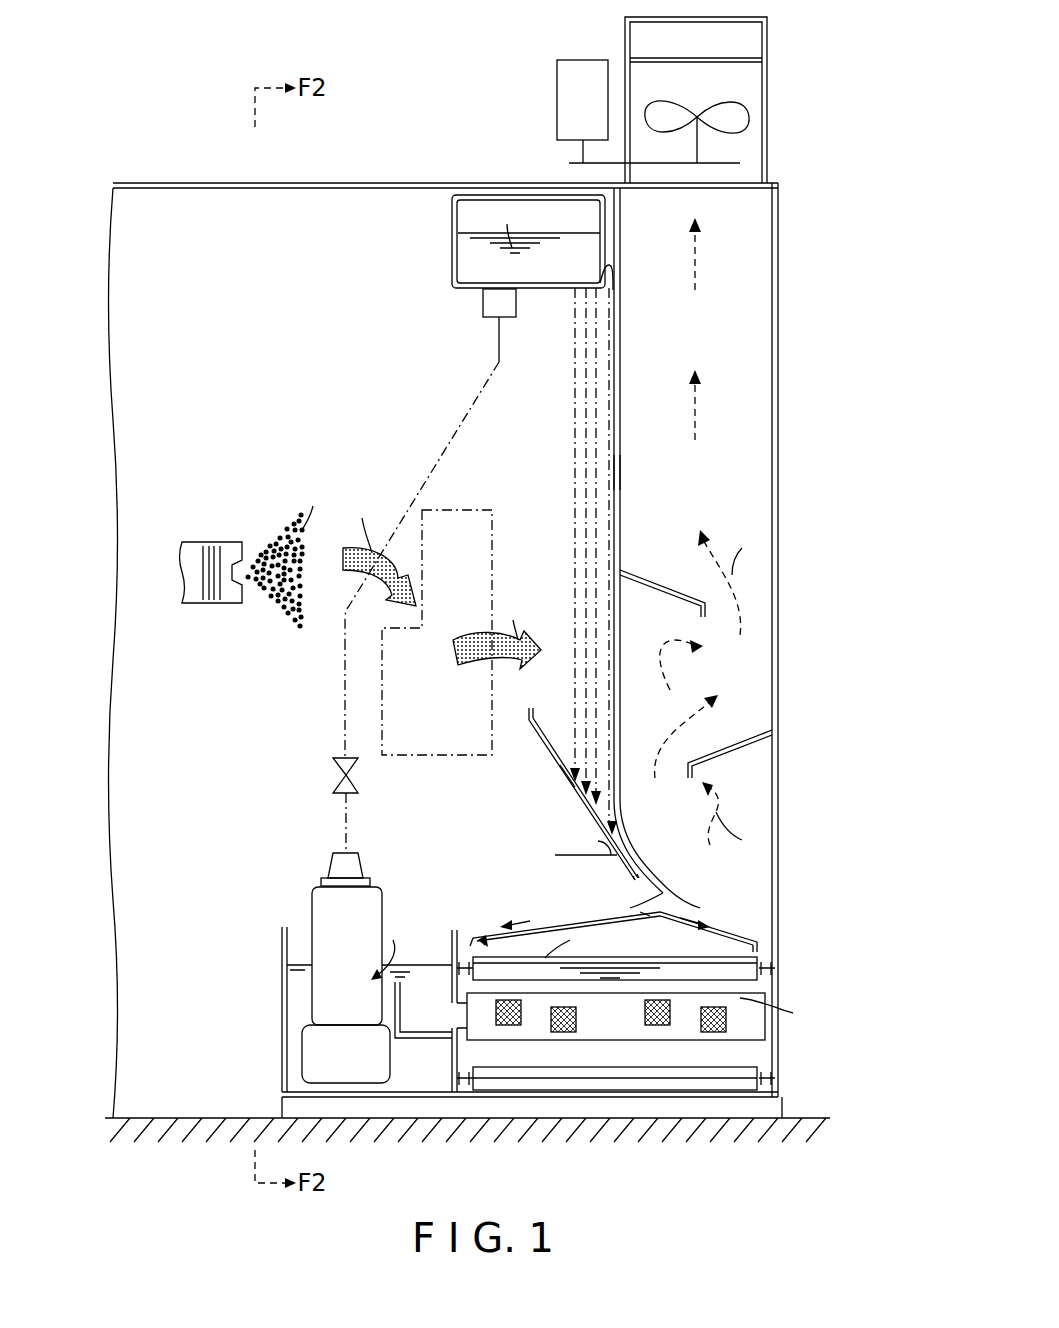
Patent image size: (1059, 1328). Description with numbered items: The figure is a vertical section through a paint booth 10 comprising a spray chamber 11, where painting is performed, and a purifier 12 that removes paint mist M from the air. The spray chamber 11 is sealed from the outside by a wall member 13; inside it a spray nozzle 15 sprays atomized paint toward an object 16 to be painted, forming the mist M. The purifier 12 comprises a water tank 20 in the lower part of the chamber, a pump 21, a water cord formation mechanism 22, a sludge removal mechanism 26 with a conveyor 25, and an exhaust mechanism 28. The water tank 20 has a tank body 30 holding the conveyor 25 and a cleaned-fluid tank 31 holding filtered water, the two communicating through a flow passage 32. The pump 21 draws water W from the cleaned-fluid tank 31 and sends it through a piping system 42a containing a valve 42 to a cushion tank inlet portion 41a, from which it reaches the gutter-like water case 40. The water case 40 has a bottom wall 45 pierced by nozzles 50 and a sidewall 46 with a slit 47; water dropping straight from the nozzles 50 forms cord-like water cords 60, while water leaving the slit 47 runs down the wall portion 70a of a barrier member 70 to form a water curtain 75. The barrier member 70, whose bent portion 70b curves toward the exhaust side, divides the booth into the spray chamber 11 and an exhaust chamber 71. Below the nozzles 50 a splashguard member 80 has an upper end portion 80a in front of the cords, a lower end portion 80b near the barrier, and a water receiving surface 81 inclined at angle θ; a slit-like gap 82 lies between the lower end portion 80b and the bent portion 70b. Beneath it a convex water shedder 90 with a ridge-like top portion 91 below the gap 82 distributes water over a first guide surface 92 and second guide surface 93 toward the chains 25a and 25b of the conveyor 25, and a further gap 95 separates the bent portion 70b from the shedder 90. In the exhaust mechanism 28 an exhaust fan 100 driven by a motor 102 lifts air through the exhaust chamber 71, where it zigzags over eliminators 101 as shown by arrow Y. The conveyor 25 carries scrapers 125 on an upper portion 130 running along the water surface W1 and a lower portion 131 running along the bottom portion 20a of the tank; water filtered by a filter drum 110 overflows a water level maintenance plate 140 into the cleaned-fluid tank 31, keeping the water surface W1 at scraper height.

The paint booth 10 is at (206, 182).
The spray chamber 11 is at (240, 395).
The purifier 12 is at (302, 817).
The wall member 13 is at (778, 427).
The spray nozzle 15 is at (236, 542).
The object to be painted 16 is at (380, 647).
The water tank 20 is at (462, 1098).
The bottom portion of the water tank 20a is at (548, 1098).
The pump 21 is at (312, 910).
The water cord formation mechanism 22 is at (464, 331).
The conveyor 25 is at (472, 934).
The chain of the conveyor 25a is at (466, 949).
The chain of the conveyor 25b is at (763, 944).
The sludge removal mechanism 26 is at (703, 1062).
The exhaust mechanism 28 is at (793, 74).
The tank body 30 is at (450, 1058).
The cleaned-fluid tank 31 is at (282, 1027).
The flow passage 32 is at (452, 1013).
The water case 40 is at (452, 260).
The cushion tank inlet portion 41a is at (483, 303).
The valve 42 is at (333, 780).
The piping system 42a is at (345, 710).
The bottom wall 45 is at (600, 285).
The sidewall 46 is at (616, 220).
The slit 47 is at (617, 252).
The nozzles 50 is at (612, 291).
The water cord 60 is at (596, 457).
The barrier member 70 is at (614, 380).
The wall portion 70a is at (621, 471).
The bent portion 70b is at (648, 882).
The exhaust chamber 71 is at (695, 329).
The water curtain 75 is at (609, 500).
The splashguard member 80 is at (570, 785).
The upper end portion 80a is at (530, 712).
The lower end portion 80b is at (625, 868).
The water receiving surface 81 is at (553, 757).
The gap 82 is at (640, 887).
The water shedder 90 is at (560, 925).
The top portion 91 is at (657, 918).
The first guide surface 92 is at (505, 943).
The second guide surface 93 is at (705, 928).
The gap 95 is at (670, 894).
The exhaust fan 100 is at (750, 117).
The eliminators 101 is at (652, 576).
The motor 102 is at (557, 100).
The filter drum 110 is at (737, 1033).
The scrapers 125 is at (655, 957).
The upper portion of the conveyor 130 is at (680, 970).
The lower portion of the conveyor 131 is at (770, 1079).
The water level maintenance plate 140 is at (393, 1007).
The water W is at (507, 223).
The water surface W1 is at (577, 942).
The paint mist M is at (421, 574).
The arrow indicating airflow Y is at (707, 690).